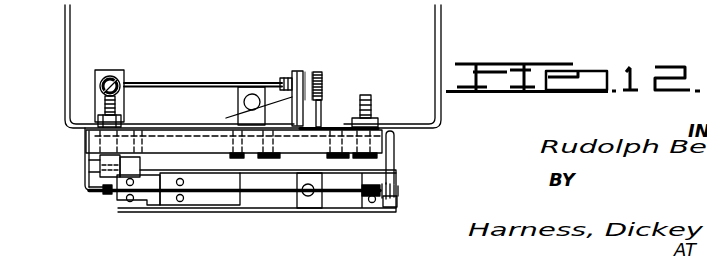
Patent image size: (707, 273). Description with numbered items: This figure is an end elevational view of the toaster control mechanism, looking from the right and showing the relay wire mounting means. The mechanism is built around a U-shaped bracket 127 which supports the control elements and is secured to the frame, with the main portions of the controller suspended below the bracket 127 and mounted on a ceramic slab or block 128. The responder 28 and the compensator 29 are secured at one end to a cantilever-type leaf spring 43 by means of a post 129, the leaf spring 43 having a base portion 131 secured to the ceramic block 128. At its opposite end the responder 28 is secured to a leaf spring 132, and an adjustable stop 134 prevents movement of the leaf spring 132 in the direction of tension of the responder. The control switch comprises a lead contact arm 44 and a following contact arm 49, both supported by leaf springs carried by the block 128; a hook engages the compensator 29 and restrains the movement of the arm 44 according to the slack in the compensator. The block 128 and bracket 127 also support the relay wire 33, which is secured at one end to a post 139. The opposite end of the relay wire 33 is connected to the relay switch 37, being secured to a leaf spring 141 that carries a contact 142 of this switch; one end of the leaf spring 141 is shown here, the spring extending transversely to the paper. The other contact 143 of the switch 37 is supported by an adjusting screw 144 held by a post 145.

The U-shaped bracket 127 is at (438, 45).
The post 139 is at (124, 71).
The relay wire 33 is at (178, 83).
The post 145 is at (240, 118).
The adjusting screw 144 is at (282, 80).
The contact 142 is at (320, 137).
The leaf spring 141 is at (323, 100).
The contact 143 is at (312, 76).
The relay switch 37 is at (310, 74).
The ceramic block 128 is at (345, 130).
The base portion 131 is at (369, 99).
The leaf spring 43 is at (394, 159).
The leaf spring 132 is at (86, 168).
The adjustable stop 134 is at (93, 190).
The responder 28 is at (152, 200).
The lead contact arm 44 is at (203, 199).
The following contact arm 49 is at (337, 203).
The compensator 29 is at (357, 193).
The post 129 is at (374, 205).